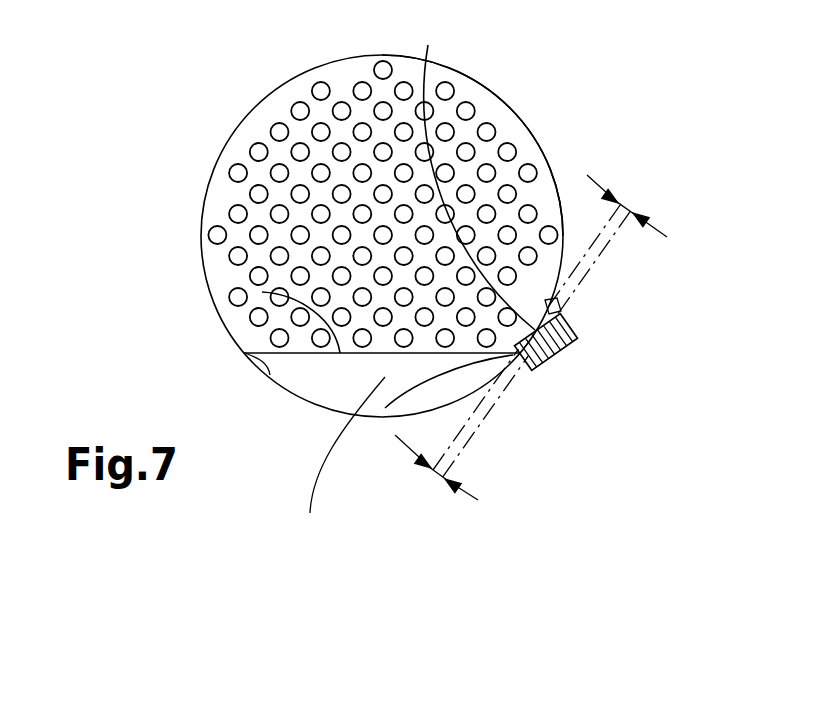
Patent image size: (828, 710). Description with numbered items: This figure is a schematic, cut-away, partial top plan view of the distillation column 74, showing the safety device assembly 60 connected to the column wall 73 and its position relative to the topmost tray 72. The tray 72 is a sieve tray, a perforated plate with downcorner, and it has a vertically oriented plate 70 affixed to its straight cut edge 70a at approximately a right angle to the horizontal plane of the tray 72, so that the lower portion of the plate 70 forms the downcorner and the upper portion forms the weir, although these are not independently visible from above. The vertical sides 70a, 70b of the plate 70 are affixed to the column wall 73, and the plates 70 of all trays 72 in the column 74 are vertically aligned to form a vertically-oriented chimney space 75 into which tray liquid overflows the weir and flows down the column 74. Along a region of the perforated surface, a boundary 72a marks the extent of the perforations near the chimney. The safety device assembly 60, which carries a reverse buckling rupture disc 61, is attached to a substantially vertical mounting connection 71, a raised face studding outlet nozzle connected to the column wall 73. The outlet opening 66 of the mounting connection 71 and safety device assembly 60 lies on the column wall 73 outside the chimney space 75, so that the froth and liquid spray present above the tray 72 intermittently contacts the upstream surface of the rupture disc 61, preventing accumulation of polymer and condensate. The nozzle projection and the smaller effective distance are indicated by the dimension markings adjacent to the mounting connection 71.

The distillation column 74 is at (222, 145).
The column wall 73 is at (556, 163).
The tray 72 is at (463, 175).
The outlet opening 66 is at (475, 172).
The perforation region boundary 72a is at (262, 292).
The vertically oriented plate 70 is at (374, 353).
The straight cut edge 70a is at (270, 375).
The vertical side of plate 70b is at (385, 408).
The chimney space 75 is at (340, 461).
The rupture disc 61 is at (560, 340).
The mounting connection 71 is at (557, 308).
The safety device assembly 60 is at (555, 375).